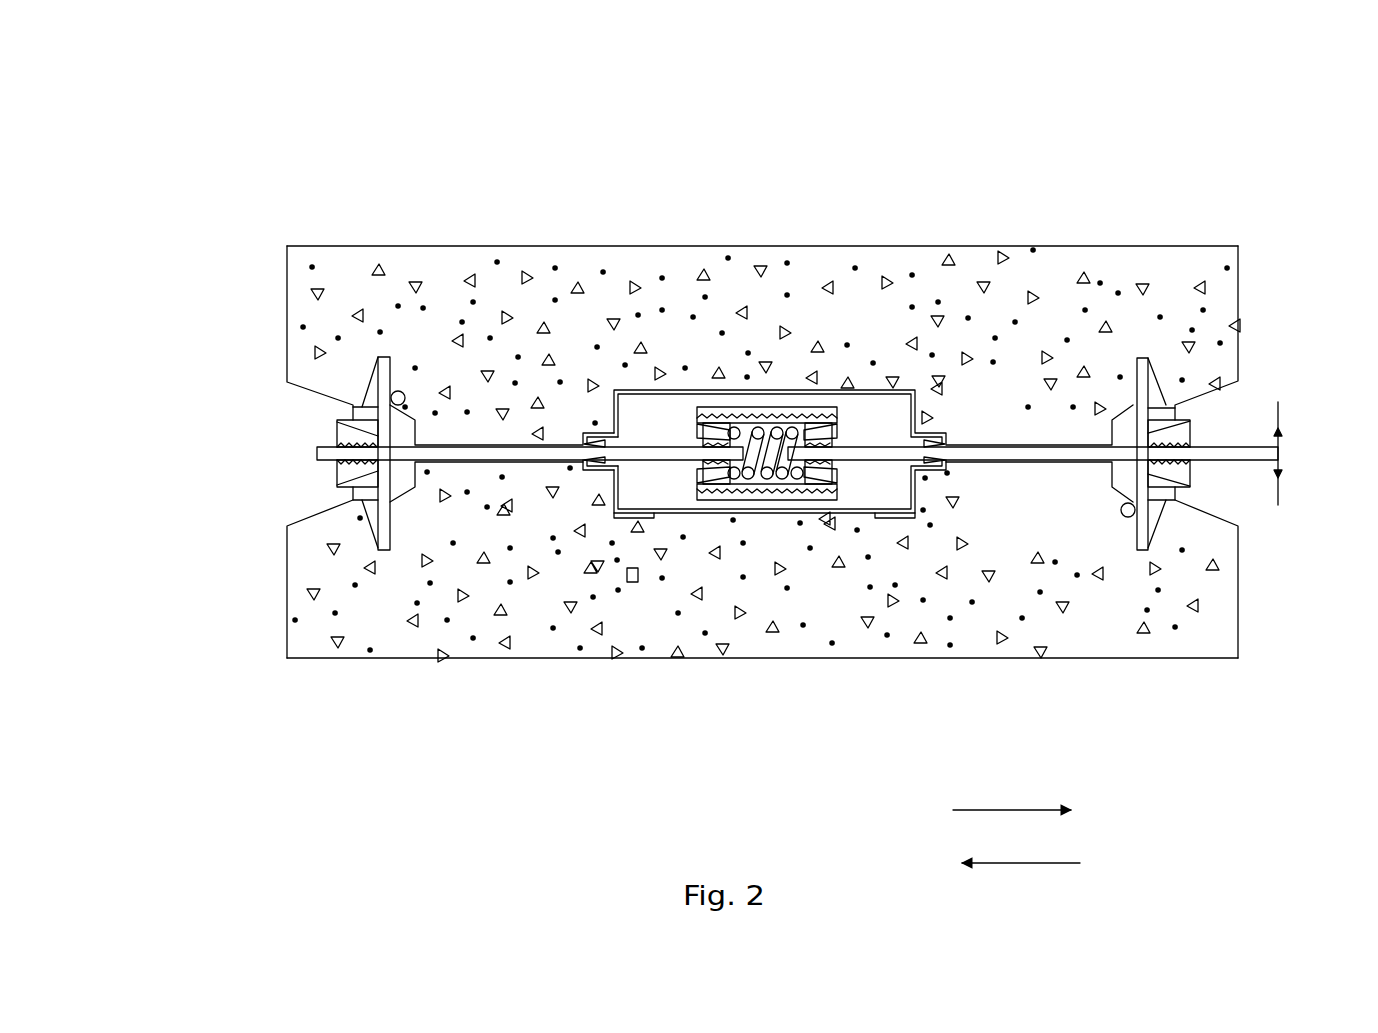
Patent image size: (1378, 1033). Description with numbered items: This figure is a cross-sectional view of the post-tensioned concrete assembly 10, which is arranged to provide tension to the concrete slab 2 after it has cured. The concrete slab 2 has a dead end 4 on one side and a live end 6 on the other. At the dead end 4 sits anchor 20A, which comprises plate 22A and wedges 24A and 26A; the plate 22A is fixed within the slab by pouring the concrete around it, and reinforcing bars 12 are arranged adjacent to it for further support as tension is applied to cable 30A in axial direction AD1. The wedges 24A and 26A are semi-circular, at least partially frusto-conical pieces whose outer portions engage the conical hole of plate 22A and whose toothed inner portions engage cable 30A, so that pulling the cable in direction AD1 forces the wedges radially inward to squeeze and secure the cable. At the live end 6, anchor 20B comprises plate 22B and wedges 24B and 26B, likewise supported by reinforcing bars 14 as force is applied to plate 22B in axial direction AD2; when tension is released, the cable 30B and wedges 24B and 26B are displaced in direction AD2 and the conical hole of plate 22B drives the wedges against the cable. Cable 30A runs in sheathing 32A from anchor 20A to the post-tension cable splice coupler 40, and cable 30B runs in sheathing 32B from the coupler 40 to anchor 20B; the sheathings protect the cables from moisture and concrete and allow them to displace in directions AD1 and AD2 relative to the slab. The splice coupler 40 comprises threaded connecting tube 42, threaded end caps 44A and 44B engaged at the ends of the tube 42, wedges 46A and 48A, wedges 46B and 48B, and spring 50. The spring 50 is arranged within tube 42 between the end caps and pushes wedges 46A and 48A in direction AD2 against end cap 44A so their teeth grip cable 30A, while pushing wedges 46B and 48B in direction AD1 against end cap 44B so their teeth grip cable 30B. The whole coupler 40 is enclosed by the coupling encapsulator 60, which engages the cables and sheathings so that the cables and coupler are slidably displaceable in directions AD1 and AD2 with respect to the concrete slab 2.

The post-tensioned concrete assembly 10 is at (1090, 54).
The concrete slab 2 is at (497, 302).
The end 4 is at (311, 216).
The end 6 is at (1288, 211).
The reinforcing bars 12 is at (400, 392).
The reinforcing bars 14 is at (1123, 515).
The anchor 20A is at (288, 511).
The anchor 20B is at (1268, 394).
The plate 22A is at (380, 551).
The plate 22B is at (1143, 358).
The wedge 24A is at (343, 446).
The wedge 24B is at (1190, 428).
The wedge 26A is at (347, 472).
The wedge 26B is at (1247, 459).
The cable 30A is at (338, 458).
The cable 30B is at (1190, 474).
The sheathing 32A is at (472, 467).
The sheathing 32B is at (1035, 428).
The post-tension cable splice coupler 40 is at (793, 493).
The threaded connecting tube 42 is at (763, 493).
The threaded end cap 44A is at (711, 493).
The threaded end cap 44B is at (812, 424).
The wedge 46A is at (720, 435).
The wedge 46B is at (828, 432).
The wedge 48A is at (703, 486).
The wedge 48B is at (816, 484).
The spring 50 is at (777, 428).
The coupling encapsulator 60 is at (631, 381).
The axial direction AD1 is at (993, 810).
The axial direction AD2 is at (1013, 863).